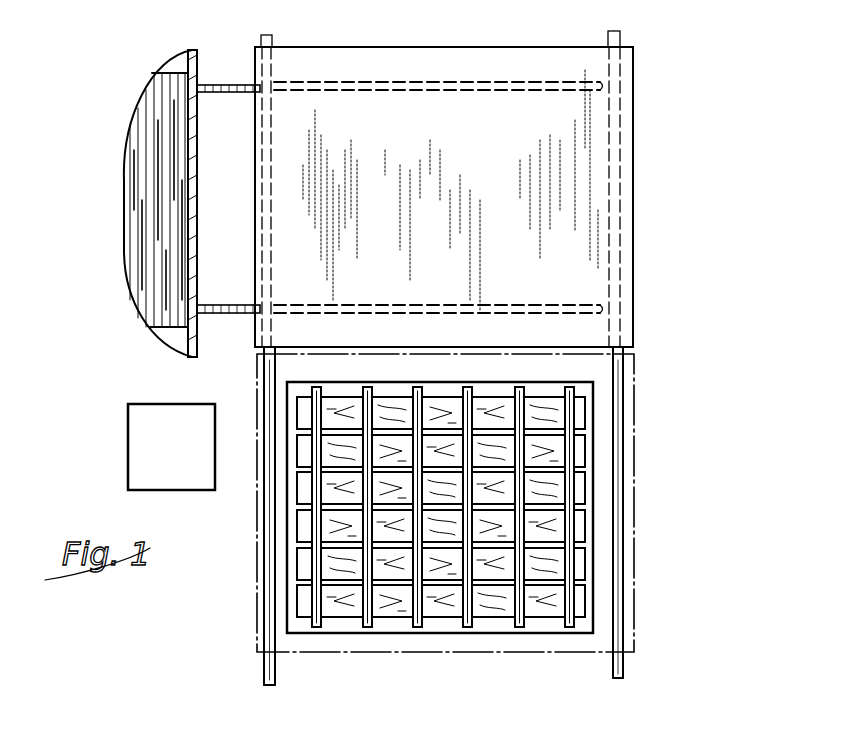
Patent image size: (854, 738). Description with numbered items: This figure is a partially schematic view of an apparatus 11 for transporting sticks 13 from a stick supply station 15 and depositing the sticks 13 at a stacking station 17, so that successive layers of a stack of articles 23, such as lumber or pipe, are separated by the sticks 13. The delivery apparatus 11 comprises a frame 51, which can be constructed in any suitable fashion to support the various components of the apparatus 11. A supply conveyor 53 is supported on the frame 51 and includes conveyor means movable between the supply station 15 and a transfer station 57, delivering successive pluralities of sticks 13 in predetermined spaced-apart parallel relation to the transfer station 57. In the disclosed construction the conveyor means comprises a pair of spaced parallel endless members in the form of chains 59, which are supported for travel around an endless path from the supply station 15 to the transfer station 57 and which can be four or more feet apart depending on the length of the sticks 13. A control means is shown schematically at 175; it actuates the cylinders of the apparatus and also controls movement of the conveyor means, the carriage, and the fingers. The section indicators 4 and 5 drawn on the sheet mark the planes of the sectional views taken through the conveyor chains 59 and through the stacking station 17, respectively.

The apparatus 11 is at (405, 370).
The sticks 13 is at (370, 628).
The stick supply station 15 is at (165, 150).
The stacking station 17 is at (648, 522).
The articles 23 is at (583, 487).
The frame 51 is at (270, 672).
The supply conveyor 53 is at (215, 122).
The transfer station 57 is at (436, 124).
The chains 59 is at (237, 84).
The control means 175 is at (198, 457).
The section line 4- 4 is at (107, 372).
The section line 5- 5 is at (653, 18).